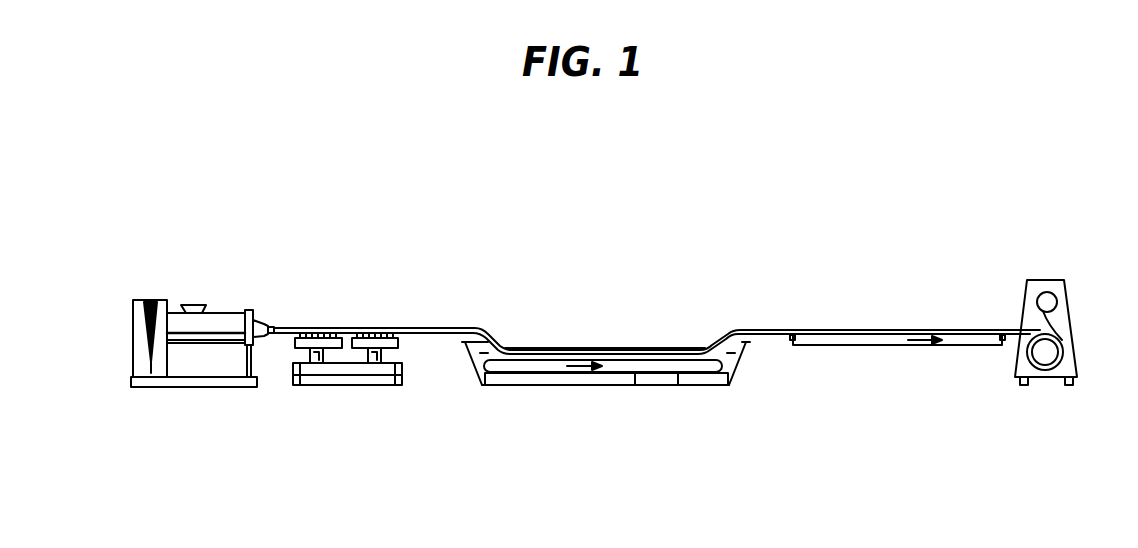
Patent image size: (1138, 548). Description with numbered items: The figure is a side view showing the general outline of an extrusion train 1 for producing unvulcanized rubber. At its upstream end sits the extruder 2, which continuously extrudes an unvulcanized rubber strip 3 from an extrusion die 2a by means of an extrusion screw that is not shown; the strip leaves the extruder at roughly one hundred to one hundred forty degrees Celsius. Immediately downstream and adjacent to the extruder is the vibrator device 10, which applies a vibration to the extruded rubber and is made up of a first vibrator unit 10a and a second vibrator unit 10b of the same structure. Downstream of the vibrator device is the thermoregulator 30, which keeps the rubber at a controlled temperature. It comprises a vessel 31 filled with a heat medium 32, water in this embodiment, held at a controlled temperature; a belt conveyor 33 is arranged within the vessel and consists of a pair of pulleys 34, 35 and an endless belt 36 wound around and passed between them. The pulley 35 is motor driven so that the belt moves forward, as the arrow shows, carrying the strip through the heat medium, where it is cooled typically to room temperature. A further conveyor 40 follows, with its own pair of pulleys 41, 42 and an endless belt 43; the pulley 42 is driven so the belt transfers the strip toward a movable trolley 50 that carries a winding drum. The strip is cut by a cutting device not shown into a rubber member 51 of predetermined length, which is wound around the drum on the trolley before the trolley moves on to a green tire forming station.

The extrusion train 1 is at (570, 262).
The extruder 2 is at (216, 312).
The extrusion die 2a is at (271, 324).
The unvulcanized rubber strip 3 is at (437, 328).
The vibrator device 10 is at (339, 405).
The first vibrator unit 10a is at (298, 388).
The second vibrator unit 10b is at (343, 387).
The thermoregulator 30 is at (606, 375).
The vessel 31 is at (542, 386).
The heat medium 32 is at (660, 347).
The belt conveyor 33 is at (640, 386).
The pulley 34 is at (485, 386).
The pulley 35 is at (727, 386).
The endless belt 36 is at (683, 386).
The conveyor 40 is at (896, 321).
The pulley 41 is at (797, 341).
The pulley 42 is at (1000, 342).
The endless belt 43 is at (890, 347).
The movable trolley 50 is at (1064, 301).
The rubber member 51 is at (1063, 338).